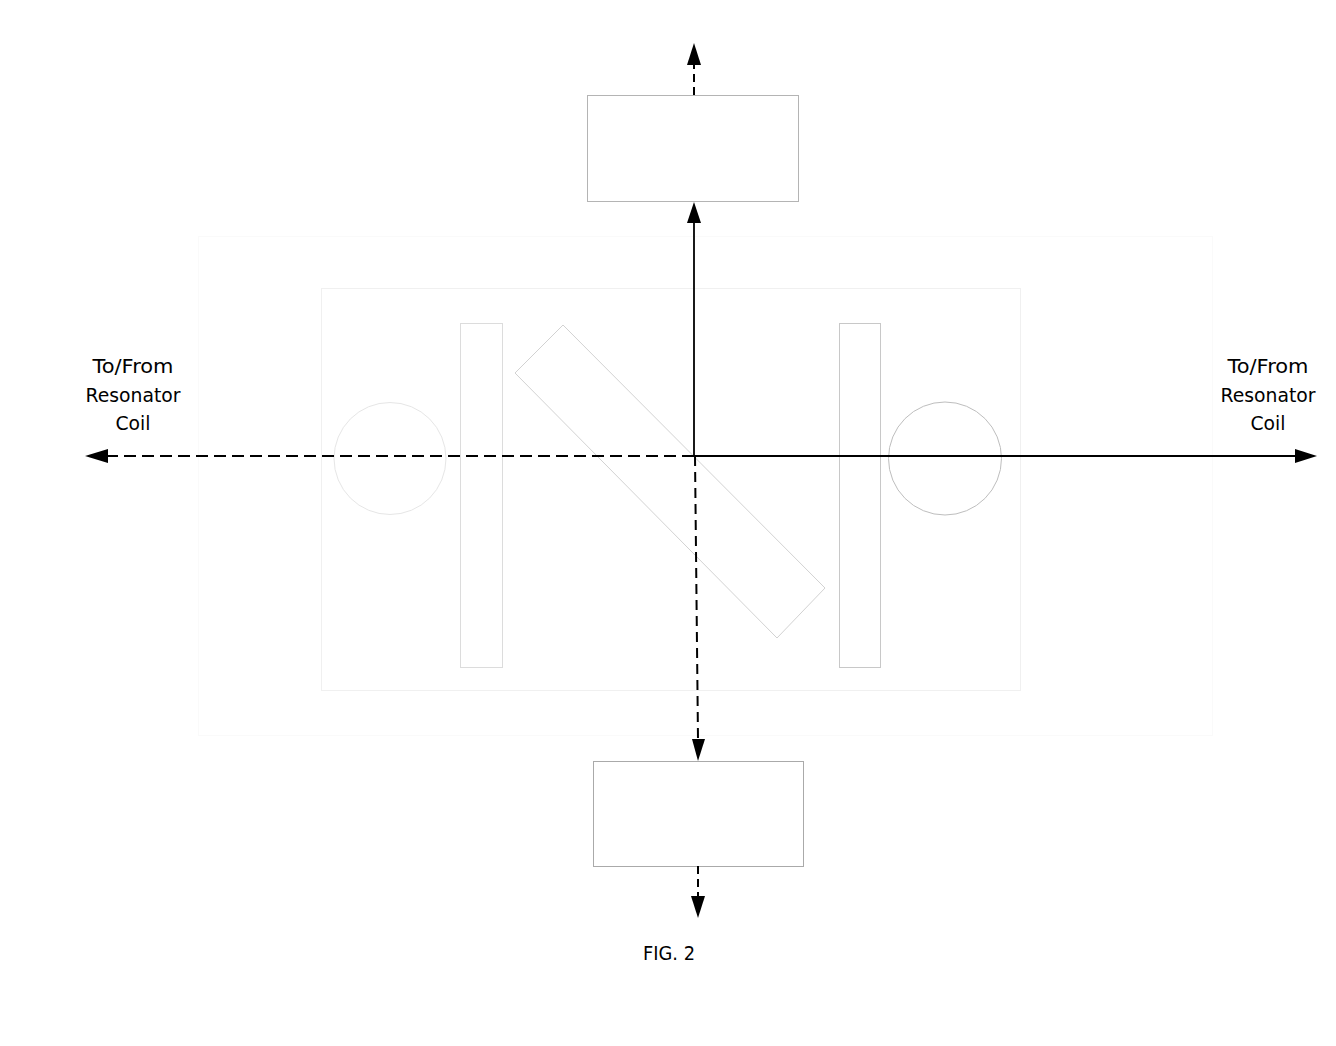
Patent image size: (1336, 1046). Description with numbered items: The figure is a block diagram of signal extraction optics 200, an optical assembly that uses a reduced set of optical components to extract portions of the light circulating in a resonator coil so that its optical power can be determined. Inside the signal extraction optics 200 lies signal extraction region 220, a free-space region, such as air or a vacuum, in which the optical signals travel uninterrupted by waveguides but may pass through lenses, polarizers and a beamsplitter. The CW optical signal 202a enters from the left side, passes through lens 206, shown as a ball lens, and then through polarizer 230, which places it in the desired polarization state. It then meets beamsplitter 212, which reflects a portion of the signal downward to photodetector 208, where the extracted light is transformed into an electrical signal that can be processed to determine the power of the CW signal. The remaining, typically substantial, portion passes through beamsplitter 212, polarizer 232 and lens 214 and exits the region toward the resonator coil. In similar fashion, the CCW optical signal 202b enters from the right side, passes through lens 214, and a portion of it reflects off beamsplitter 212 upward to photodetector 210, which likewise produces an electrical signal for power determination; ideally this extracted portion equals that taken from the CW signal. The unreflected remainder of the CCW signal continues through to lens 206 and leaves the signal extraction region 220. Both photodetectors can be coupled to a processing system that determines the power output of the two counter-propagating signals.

The signal extraction optics 200 is at (1204, 724).
The signal extraction region 220 is at (382, 288).
The lens 206 is at (390, 403).
The polarizer 230 is at (462, 587).
The beamsplitter 212 is at (647, 507).
The polarizer 232 is at (879, 393).
The lens 214 is at (945, 515).
The CW optical signal 202a is at (694, 585).
The CCW optical signal 202b is at (694, 377).
The photodetector 210 is at (798, 148).
The photodetector 208 is at (593, 813).